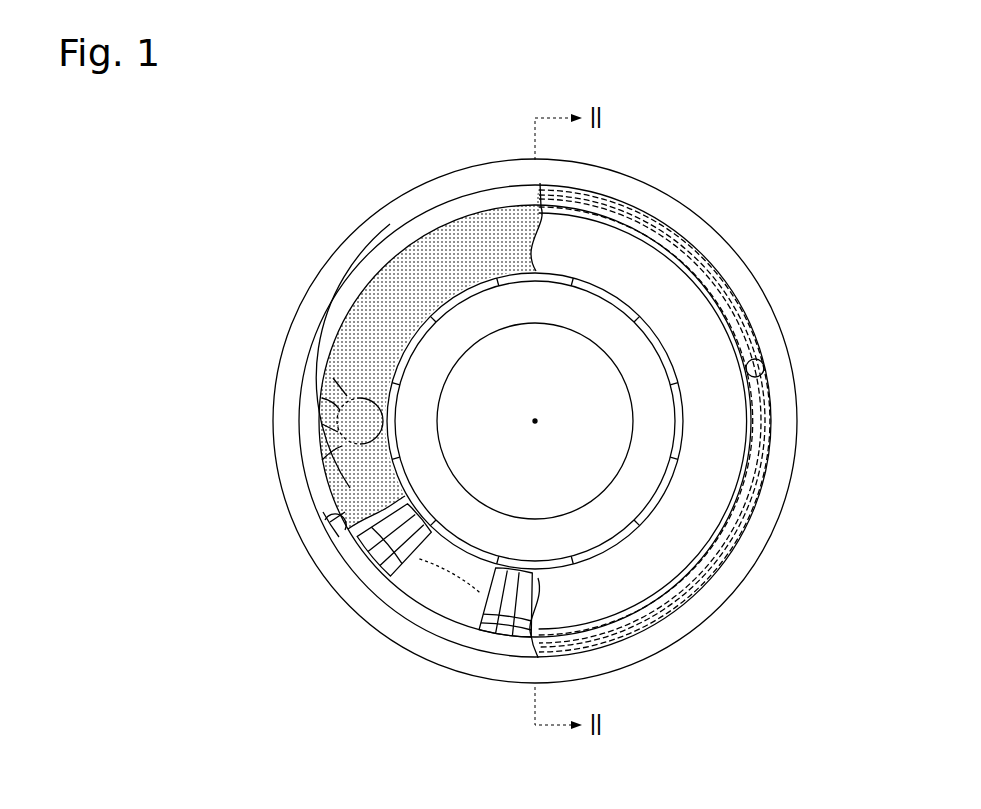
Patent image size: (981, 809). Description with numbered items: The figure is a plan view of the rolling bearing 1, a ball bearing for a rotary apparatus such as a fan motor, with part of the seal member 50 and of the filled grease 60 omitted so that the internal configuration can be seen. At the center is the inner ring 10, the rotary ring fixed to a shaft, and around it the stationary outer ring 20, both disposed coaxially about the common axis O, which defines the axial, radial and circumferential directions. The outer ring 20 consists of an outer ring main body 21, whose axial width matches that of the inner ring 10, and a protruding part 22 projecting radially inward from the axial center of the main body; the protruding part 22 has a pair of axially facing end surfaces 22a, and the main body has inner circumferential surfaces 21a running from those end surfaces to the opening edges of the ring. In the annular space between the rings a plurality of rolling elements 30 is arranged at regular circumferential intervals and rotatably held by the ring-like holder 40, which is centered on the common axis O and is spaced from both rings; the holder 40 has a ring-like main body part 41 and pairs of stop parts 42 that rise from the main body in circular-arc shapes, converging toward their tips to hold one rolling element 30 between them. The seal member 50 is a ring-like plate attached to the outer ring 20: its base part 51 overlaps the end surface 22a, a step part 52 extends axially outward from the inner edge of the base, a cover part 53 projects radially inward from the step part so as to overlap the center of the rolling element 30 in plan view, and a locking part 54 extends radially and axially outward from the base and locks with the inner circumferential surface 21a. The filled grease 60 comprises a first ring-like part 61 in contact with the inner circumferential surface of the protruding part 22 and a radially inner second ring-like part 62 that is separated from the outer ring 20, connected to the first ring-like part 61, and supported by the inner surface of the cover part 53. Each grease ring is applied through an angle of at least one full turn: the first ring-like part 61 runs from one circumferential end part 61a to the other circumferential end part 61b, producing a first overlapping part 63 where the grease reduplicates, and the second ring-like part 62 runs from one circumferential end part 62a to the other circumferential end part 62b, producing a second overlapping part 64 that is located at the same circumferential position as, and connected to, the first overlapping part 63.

The rolling bearing 1 is at (580, 392).
The inner ring 10 is at (597, 435).
The outer ring 20 is at (492, 421).
The outer ring main body 21 is at (330, 522).
The inner circumferential surface of outer ring main body 21a is at (340, 532).
The protruding part 22 is at (457, 421).
The end surface of protruding part 22a is at (338, 318).
The rolling element 30 is at (437, 598).
The holder 40 is at (423, 623).
The main body part of holder 41 is at (525, 610).
The stop part 42 is at (420, 562).
The seal member 50 is at (693, 378).
The base part of seal member 51 is at (670, 242).
The step part of seal member 52 is at (705, 262).
The cover part of seal member 53 is at (698, 342).
The locking part of seal member 54 is at (766, 378).
The filled grease 60 is at (374, 330).
The first ring-like part 61 is at (383, 272).
The one circumferential end part of first ring-like part 61a is at (322, 460).
The other circumferential end part of first ring-like part 61b is at (335, 404).
The second ring-like part 62 is at (484, 248).
The one circumferential end part of second ring-like part 62a is at (330, 522).
The other circumferential end part of second ring-like part 62b is at (335, 380).
The first overlapping part 63 is at (325, 428).
The second overlapping part 64 is at (338, 418).
The common axis O is at (537, 421).